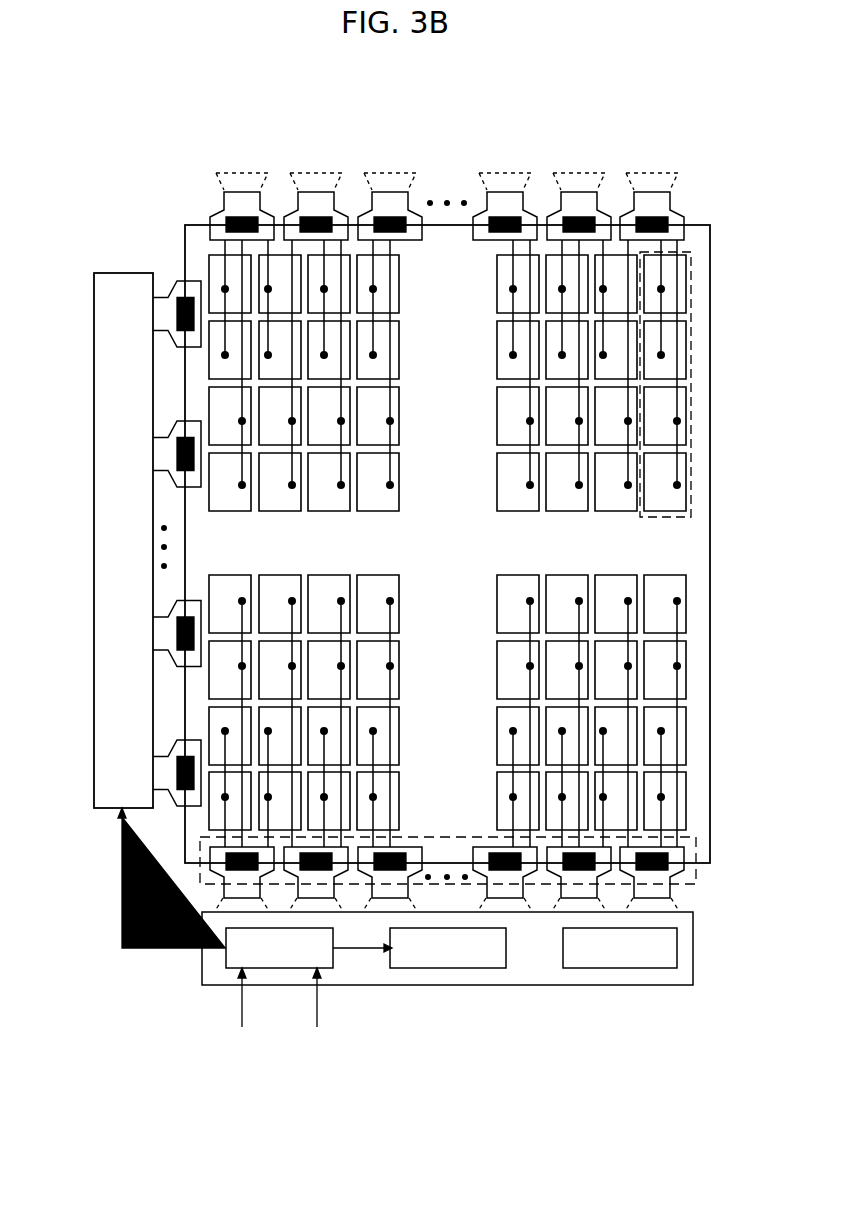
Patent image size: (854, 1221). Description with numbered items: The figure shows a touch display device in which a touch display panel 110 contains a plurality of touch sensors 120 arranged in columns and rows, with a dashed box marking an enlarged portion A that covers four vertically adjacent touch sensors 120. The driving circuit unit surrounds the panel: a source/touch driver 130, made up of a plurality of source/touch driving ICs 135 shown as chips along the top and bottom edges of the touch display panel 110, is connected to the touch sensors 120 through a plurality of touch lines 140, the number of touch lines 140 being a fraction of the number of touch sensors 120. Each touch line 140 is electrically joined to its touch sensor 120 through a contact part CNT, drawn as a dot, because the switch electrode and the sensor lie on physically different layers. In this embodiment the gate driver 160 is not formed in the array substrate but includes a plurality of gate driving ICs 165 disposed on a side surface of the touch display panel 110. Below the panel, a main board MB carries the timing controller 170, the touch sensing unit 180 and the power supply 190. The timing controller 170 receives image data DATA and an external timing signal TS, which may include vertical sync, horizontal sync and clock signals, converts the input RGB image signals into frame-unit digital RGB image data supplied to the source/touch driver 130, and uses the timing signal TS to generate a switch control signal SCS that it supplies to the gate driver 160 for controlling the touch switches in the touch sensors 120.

The touch display panel 110 is at (703, 221).
The touch sensor 120 is at (377, 512).
The source/touch driver 130 is at (461, 517).
The source/touch driving IC 135 is at (669, 165).
The touch line 140 is at (394, 419).
The contact part CNT is at (395, 486).
The portion A is at (694, 398).
The gate driver 160 is at (127, 272).
The gate driving IC 165 is at (165, 453).
The timing controller 170 is at (263, 958).
The touch sensing unit 180 is at (432, 958).
The power supply 190 is at (604, 958).
The main board MB is at (693, 948).
The switch control signal SCS is at (172, 878).
The image data DATA is at (240, 1009).
The timing signal TS is at (316, 1009).